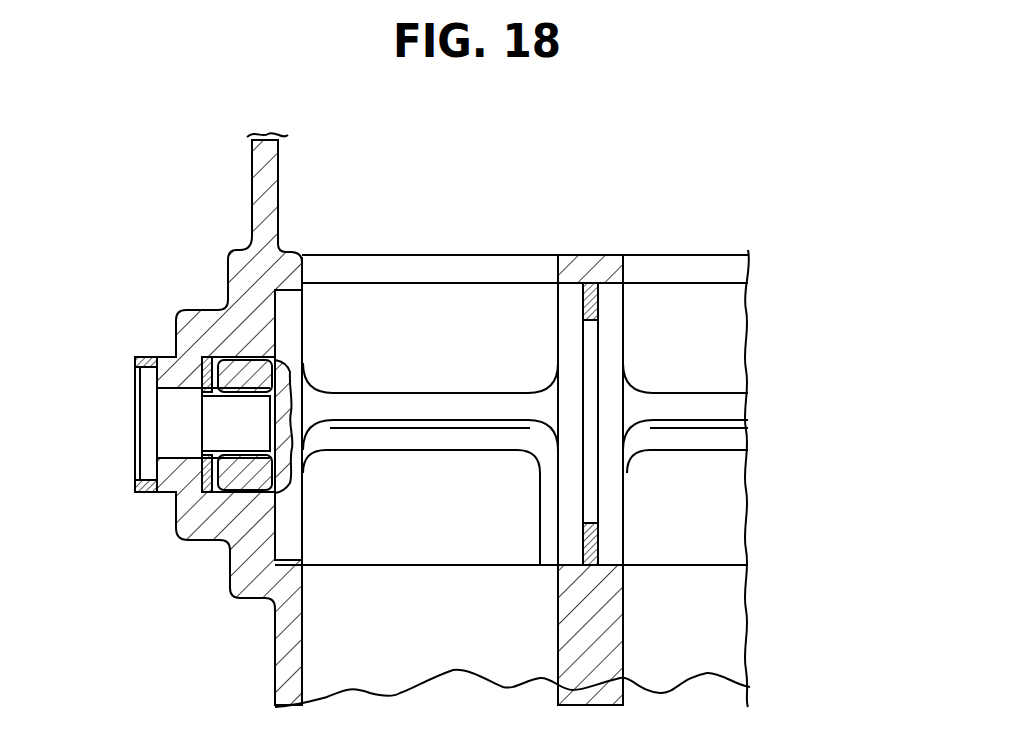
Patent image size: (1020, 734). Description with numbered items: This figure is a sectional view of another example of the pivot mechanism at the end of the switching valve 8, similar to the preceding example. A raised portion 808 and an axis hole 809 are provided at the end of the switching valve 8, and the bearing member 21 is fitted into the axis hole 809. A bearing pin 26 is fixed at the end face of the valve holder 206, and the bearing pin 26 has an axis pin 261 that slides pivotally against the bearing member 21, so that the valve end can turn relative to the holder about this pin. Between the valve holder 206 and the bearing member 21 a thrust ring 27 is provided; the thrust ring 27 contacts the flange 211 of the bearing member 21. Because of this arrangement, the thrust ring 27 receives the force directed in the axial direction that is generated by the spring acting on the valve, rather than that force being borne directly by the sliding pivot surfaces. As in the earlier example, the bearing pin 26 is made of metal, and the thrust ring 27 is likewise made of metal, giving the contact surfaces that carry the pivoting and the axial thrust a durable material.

The valve holder 206 is at (252, 162).
The raised portion 808 is at (240, 366).
The axis hole 809 is at (262, 378).
The switching valve 8 is at (625, 300).
The bearing member 21 is at (170, 362).
The bearing pin 26 is at (135, 393).
The axis pin 261 is at (233, 422).
The thrust ring 27 is at (165, 490).
The flange 211 is at (275, 490).